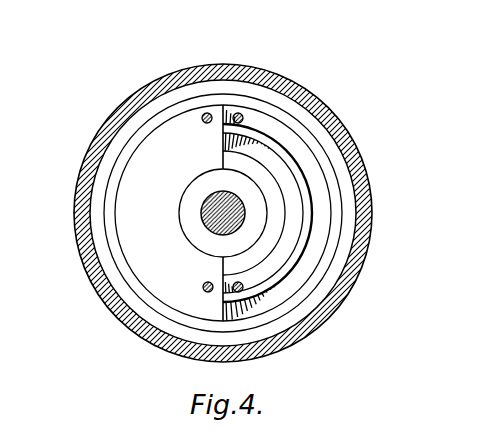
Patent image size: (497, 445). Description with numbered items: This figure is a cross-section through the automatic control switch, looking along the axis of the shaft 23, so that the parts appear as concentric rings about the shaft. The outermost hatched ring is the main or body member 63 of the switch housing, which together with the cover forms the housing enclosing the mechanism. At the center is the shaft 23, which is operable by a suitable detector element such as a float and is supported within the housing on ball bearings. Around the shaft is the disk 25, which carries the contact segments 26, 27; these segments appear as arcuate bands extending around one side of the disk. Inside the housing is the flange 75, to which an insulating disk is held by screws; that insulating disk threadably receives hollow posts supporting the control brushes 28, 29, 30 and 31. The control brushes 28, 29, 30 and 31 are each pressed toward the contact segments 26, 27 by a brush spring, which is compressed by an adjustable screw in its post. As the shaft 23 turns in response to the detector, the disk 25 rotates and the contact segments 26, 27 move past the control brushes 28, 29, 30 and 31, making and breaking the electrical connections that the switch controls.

The flange 75 is at (281, 98).
The main or body member 63 is at (355, 156).
The disk 25 is at (342, 193).
The contact segment 26 is at (297, 143).
The shaft 23 is at (204, 219).
The contact segment 27 is at (297, 242).
The control brush 31 is at (223, 127).
The control brush 29 is at (225, 290).
The control brush 30 is at (203, 124).
The control brush 28 is at (203, 286).